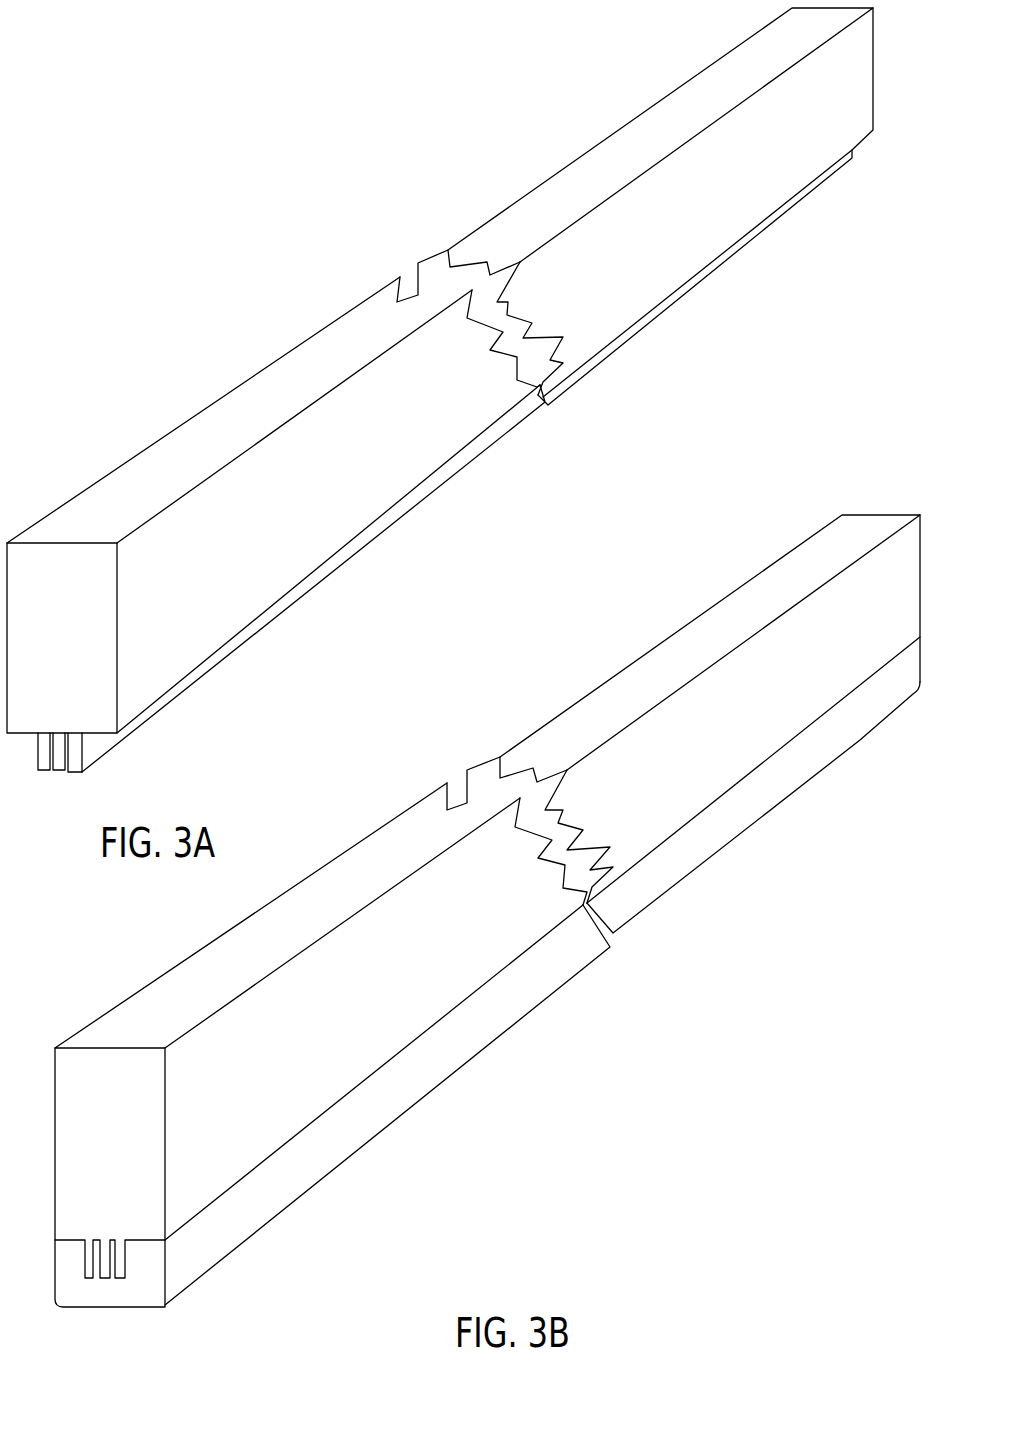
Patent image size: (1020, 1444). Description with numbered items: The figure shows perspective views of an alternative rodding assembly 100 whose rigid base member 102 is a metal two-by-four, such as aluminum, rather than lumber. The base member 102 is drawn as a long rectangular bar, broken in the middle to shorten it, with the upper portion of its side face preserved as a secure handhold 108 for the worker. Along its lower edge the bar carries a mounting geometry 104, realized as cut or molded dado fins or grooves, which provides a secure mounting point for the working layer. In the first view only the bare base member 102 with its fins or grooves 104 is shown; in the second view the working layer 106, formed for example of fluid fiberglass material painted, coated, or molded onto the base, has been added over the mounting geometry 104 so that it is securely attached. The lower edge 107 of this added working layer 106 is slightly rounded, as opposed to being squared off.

In FIG. 3A, the rodding assembly 100 is at (440, 390).
In FIG. 3B, the rodding assembly 100 is at (487, 861).
In FIG. 3A, the rigid base member 102 is at (220, 435).
In FIG. 3B, the rigid base member 102 is at (598, 712).
In FIG. 3A, the mounting geometry 104 is at (235, 650).
In FIG. 3B, the mounting geometry 104 is at (127, 1278).
In FIG. 3B, the working layer 106 is at (408, 1078).
In FIG. 3B, the lower edge 107 is at (675, 888).
In FIG. 3A, the secure handhold 108 is at (722, 202).
In FIG. 3B, the secure handhold 108 is at (707, 757).